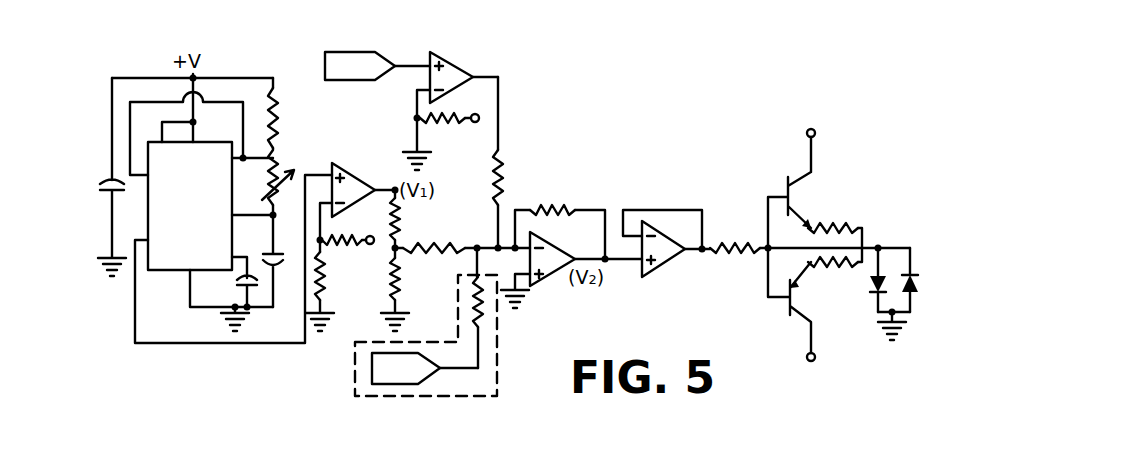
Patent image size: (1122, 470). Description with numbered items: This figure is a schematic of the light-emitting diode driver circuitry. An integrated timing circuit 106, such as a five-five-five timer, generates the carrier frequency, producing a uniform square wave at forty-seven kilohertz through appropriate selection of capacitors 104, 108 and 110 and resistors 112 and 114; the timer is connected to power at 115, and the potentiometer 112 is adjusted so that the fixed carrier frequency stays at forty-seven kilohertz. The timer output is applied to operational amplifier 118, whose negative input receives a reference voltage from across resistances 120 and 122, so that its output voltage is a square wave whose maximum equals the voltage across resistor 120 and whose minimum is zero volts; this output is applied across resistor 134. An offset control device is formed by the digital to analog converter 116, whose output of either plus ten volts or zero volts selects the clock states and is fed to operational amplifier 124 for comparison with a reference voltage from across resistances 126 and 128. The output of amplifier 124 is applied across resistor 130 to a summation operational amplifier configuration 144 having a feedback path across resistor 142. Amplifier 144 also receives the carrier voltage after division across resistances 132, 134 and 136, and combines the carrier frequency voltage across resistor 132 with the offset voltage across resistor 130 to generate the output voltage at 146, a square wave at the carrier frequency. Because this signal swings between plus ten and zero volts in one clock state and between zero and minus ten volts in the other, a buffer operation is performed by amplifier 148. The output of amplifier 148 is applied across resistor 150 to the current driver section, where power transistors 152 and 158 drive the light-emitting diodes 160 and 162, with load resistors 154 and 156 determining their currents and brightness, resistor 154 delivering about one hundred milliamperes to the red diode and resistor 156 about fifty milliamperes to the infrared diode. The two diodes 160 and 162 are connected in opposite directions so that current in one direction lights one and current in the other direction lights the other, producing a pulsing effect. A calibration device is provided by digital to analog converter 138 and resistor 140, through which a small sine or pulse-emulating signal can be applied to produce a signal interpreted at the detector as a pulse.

The capacitor 104 is at (103, 177).
The integrated timing circuit 106 is at (196, 216).
The capacitor 108 is at (240, 283).
The capacitor 110 is at (268, 250).
The potentiometer 112 is at (290, 178).
The resistor 114 is at (278, 120).
The power connection 115 is at (198, 76).
The digital to analog converter 116 is at (345, 52).
The operational amplifier 118 is at (363, 185).
The resistor 120 is at (350, 243).
The resistor 122 is at (325, 296).
The operational amplifier 124 is at (447, 60).
The resistance 126 is at (415, 135).
The resistor 128 is at (448, 123).
The resistor 130 is at (503, 162).
The resistor 132 is at (434, 243).
The resistor 134 is at (400, 220).
The resistor 136 is at (400, 290).
The digital to analog converter 138 is at (428, 382).
The resistor 140 is at (483, 320).
The resistor 142 is at (550, 208).
The summation operational amplifier configuration 144 is at (548, 284).
The output 146 is at (606, 262).
The amplifier 148 is at (668, 270).
The resistor 150 is at (729, 253).
The power transistor 152 is at (792, 192).
The load resistor 154 is at (830, 224).
The load resistor 156 is at (840, 268).
The power transistor 158 is at (795, 295).
The light-emitting diode 160 is at (872, 300).
The light-emitting diode 162 is at (916, 282).